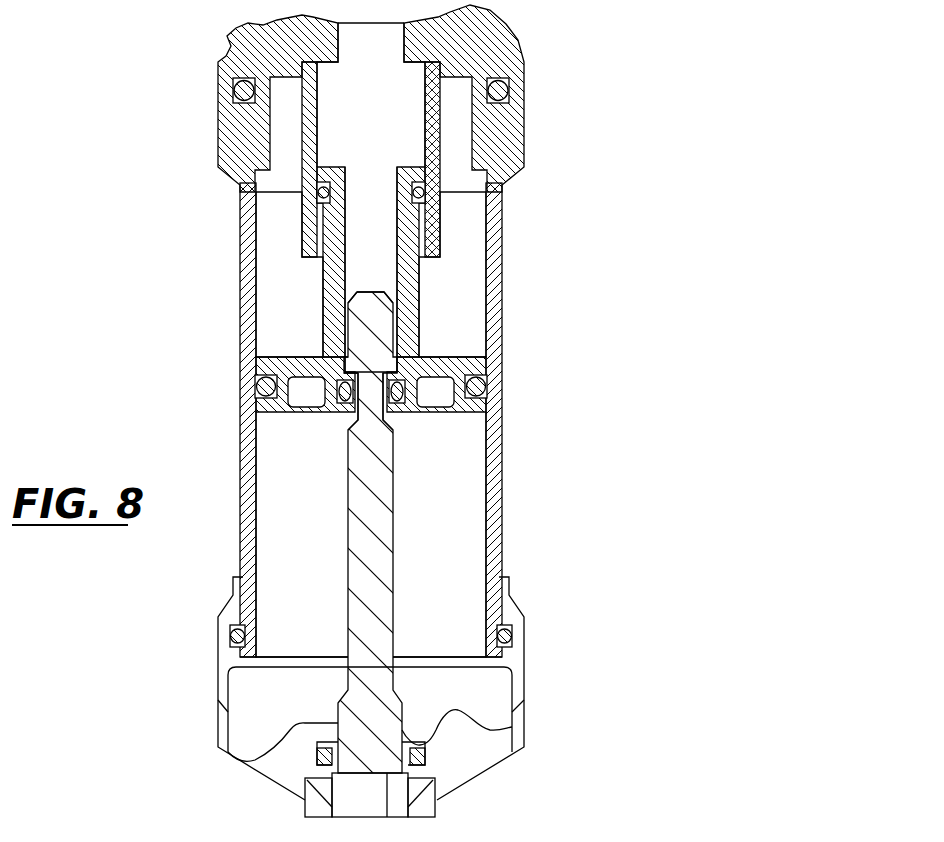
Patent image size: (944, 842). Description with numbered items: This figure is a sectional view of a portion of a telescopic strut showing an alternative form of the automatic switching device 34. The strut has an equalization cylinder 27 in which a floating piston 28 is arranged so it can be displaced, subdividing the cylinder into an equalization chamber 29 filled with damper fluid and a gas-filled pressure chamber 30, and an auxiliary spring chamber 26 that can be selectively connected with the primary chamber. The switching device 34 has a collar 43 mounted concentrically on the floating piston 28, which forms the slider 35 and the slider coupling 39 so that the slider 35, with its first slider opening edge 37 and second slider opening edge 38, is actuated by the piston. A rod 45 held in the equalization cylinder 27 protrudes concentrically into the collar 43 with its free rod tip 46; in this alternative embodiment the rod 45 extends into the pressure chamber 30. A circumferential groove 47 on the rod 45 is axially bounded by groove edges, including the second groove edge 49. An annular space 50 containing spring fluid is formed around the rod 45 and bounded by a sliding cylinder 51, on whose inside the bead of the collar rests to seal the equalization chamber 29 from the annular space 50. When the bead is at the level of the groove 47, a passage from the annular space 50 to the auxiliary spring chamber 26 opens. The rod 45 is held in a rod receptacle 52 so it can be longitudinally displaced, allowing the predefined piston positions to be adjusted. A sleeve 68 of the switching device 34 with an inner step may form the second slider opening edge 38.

The auxiliary spring chamber 26 is at (308, 620).
The equalization cylinder 27 is at (502, 262).
The floating piston 28 is at (463, 348).
The equalization chamber 29 is at (305, 300).
The pressure chamber 30 is at (454, 620).
The automatic switching device 34 is at (463, 236).
The slider 35 is at (477, 262).
The slider coupling 39 is at (477, 262).
The collar 43 is at (419, 300).
The first slider opening edge 37 is at (268, 411).
The sleeve 68 is at (354, 430).
The second slider opening edge 38 is at (274, 357).
The second groove edge 49 is at (358, 337).
The rod 45 is at (393, 548).
The free rod tip 46 is at (375, 292).
The circumferential groove 47 is at (355, 430).
The annular space 50 is at (418, 135).
The sliding cylinder 51 is at (302, 232).
The rod receptacle 52 is at (512, 727).